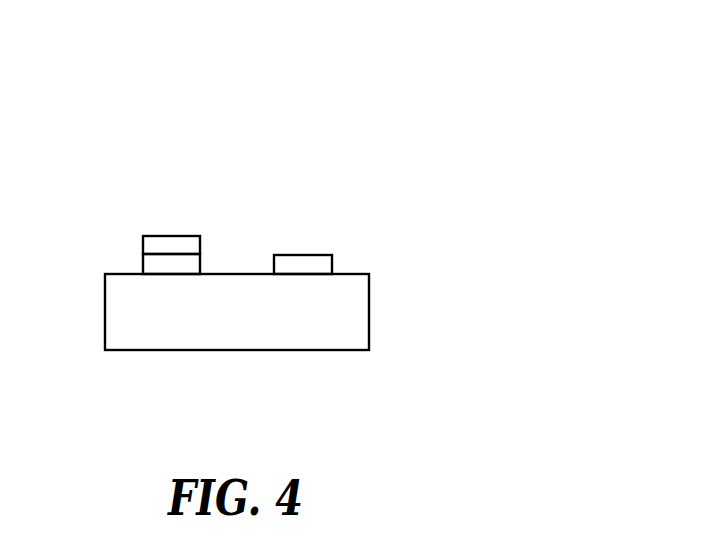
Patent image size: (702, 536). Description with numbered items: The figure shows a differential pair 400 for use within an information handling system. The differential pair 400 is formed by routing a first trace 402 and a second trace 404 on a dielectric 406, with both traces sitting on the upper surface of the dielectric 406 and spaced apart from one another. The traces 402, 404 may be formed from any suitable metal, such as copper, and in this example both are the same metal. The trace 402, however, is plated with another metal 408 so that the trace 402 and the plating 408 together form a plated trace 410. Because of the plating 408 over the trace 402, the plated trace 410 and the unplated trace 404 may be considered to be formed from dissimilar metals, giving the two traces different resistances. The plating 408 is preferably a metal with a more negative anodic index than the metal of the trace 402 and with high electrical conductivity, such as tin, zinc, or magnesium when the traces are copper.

The differential pair 400 is at (483, 109).
The trace 402 is at (143, 268).
The trace 404 is at (313, 255).
The dielectric 406 is at (105, 320).
The plating 408 is at (150, 236).
The plated trace 410 is at (174, 216).